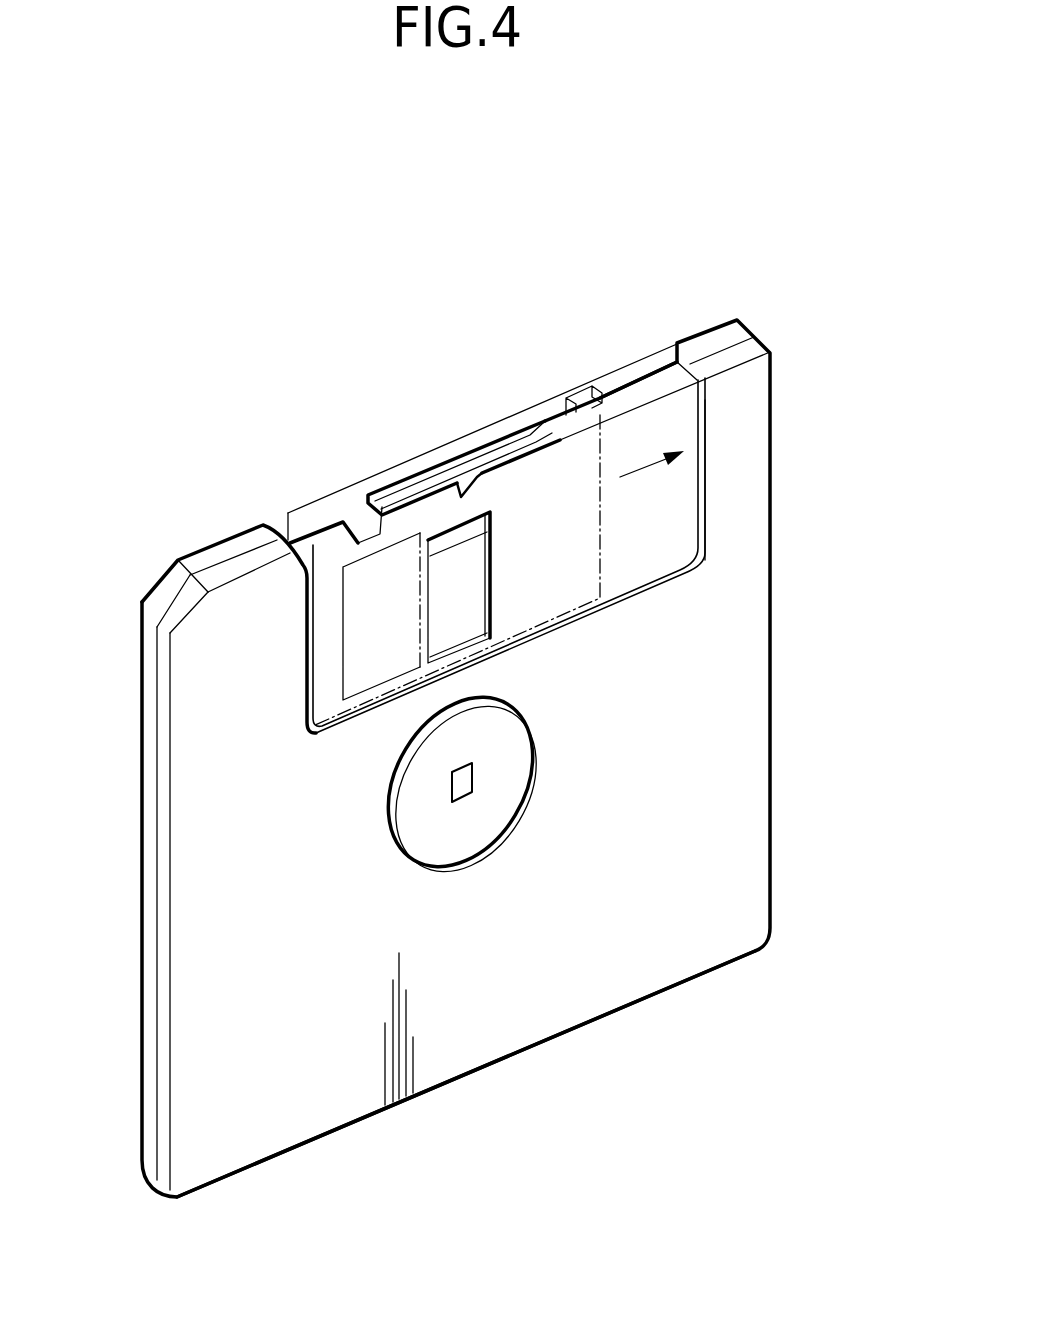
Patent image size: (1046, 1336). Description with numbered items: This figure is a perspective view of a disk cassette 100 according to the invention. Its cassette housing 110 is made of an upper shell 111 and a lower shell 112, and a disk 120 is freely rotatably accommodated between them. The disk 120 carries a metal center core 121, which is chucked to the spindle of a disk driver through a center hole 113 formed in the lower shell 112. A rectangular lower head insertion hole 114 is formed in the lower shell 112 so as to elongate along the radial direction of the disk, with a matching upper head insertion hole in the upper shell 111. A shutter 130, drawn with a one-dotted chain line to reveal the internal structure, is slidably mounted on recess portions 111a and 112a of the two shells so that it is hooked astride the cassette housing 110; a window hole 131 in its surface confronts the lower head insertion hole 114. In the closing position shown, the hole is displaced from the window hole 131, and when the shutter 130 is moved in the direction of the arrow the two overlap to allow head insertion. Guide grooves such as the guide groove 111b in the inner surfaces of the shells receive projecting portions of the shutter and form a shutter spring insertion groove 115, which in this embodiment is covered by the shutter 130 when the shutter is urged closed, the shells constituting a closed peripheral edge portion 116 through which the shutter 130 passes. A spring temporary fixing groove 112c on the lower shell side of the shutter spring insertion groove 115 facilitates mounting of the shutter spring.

The disk cassette 100 is at (578, 214).
The cassette housing 110 is at (846, 258).
The upper shell 111 is at (735, 330).
The recess portion 111a is at (657, 362).
The guide groove 111b is at (378, 500).
The lower shell 112 is at (742, 352).
The recess portion 112a is at (703, 428).
The spring temporary fixing groove 112c is at (468, 476).
The center hole 113 is at (508, 828).
The lower head insertion hole 114 is at (493, 610).
The shutter spring insertion groove 115 is at (418, 462).
The peripheral edge portion 116 is at (613, 397).
The disk 120 is at (463, 583).
The center core 121 is at (503, 780).
The shutter 130 is at (306, 507).
The window hole 131 is at (360, 640).